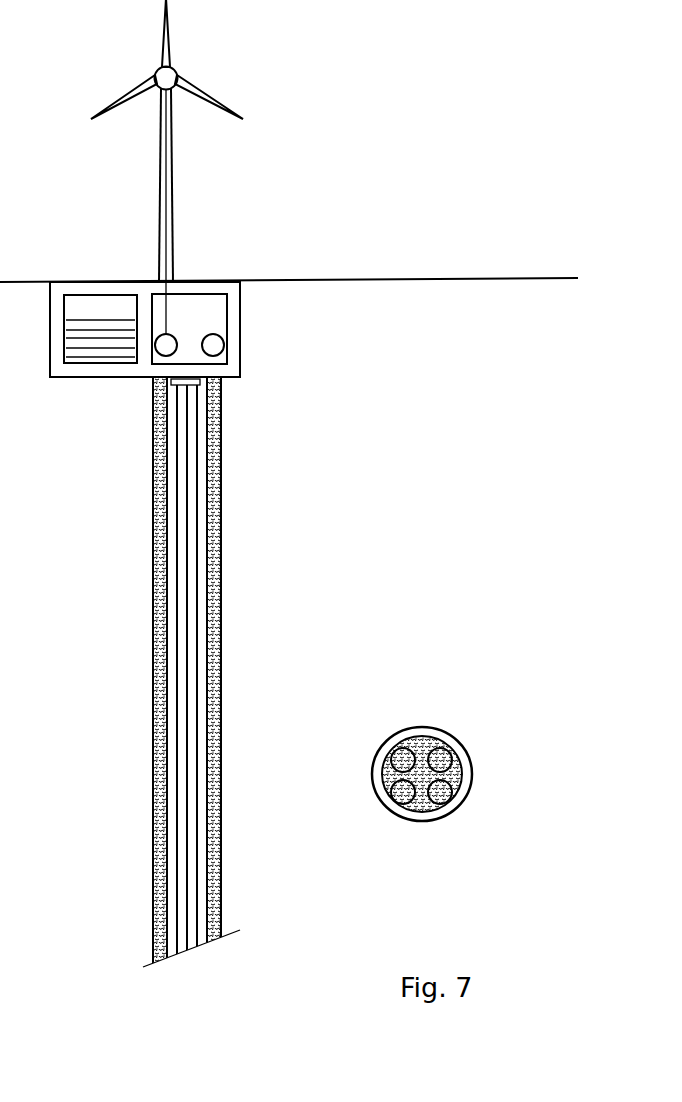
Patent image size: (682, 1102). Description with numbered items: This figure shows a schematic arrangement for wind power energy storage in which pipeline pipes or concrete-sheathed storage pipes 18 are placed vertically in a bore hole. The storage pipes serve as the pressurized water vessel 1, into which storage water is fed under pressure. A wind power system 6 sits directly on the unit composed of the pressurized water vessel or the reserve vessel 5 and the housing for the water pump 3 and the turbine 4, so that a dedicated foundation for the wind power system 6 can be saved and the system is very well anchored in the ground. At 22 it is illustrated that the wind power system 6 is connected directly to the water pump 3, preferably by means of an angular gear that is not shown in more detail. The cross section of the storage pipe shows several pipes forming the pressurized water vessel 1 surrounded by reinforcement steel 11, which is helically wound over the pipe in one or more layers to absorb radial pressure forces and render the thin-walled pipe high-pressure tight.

The pressurized water vessel 1 is at (222, 517).
The water pump 3 is at (158, 350).
The turbine 4 is at (222, 346).
The reserve vessel 5 is at (75, 368).
The wind power system 6 is at (158, 141).
The reinforcement steel 11 is at (457, 778).
The concrete-sheathed storage pipes 18 is at (202, 625).
The direct connection of wind power system to water pump 22 is at (165, 209).